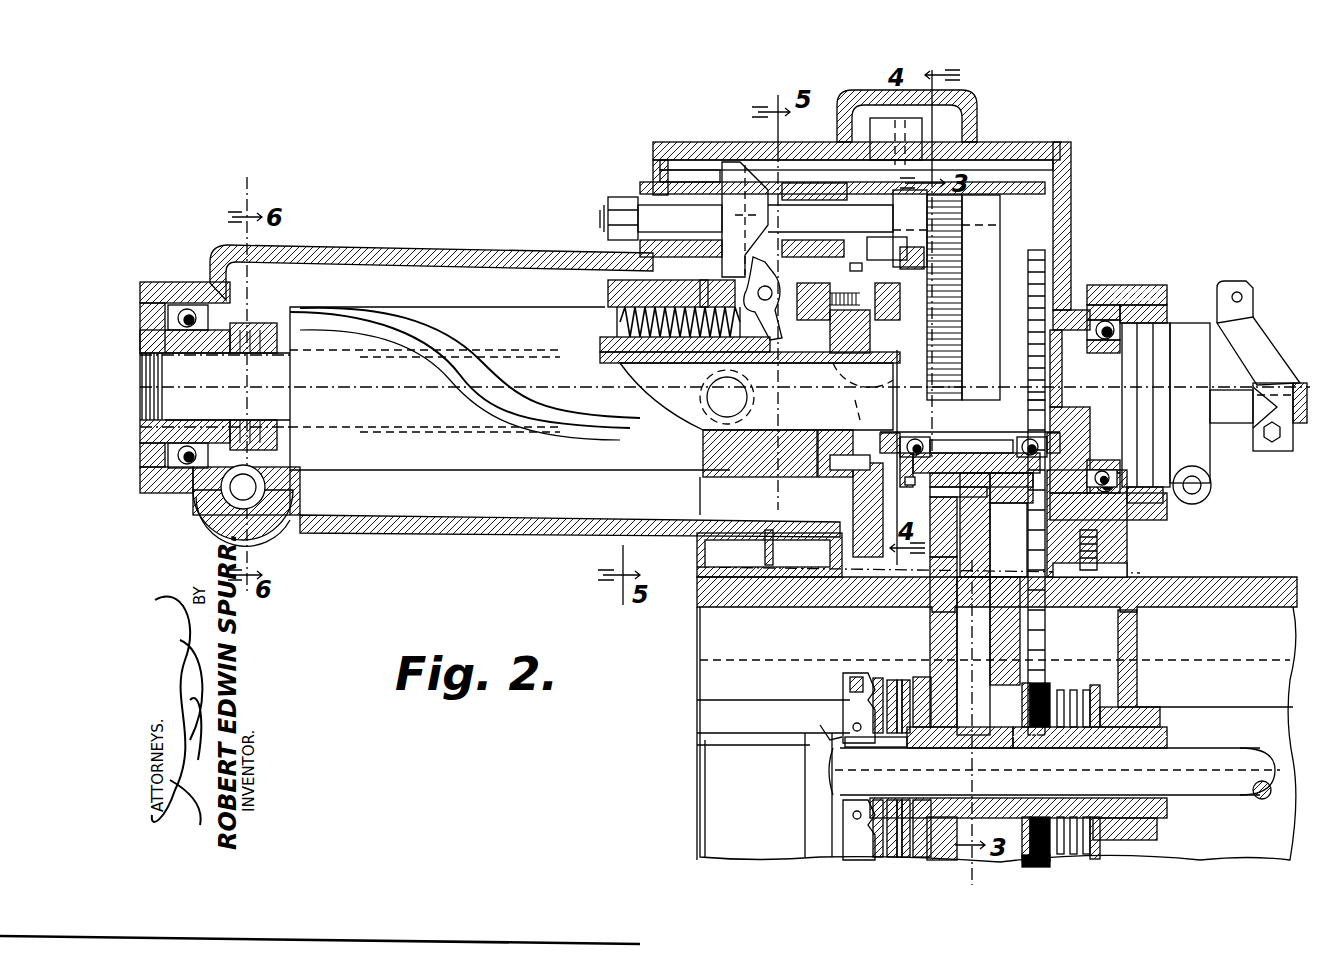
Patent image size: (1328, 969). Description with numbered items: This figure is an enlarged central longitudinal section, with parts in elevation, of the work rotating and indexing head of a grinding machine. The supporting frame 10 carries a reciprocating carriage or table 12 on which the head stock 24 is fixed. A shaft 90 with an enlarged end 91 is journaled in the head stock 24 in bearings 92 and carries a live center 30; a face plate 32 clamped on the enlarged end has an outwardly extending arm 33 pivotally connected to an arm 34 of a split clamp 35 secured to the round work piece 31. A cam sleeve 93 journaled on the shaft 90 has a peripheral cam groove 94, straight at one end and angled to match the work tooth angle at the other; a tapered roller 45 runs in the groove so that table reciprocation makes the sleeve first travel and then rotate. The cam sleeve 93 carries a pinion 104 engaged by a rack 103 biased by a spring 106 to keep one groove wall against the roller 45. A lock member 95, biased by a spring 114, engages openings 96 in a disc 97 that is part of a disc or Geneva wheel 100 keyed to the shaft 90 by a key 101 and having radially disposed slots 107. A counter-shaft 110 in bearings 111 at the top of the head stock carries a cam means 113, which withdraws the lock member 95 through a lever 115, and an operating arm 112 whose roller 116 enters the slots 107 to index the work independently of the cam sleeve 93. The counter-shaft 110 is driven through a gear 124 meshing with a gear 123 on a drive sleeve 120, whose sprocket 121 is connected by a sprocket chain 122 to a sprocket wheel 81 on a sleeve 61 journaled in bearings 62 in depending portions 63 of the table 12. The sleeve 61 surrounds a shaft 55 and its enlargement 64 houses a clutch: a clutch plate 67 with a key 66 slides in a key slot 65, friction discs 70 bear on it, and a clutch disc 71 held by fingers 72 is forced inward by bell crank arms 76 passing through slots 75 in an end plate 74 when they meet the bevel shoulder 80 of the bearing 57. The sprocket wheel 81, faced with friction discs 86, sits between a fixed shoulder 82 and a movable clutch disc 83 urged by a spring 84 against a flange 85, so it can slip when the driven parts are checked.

The main or supporting frame 10 is at (700, 712).
The carriage or table 12 is at (1235, 590).
The head stock 24 is at (700, 142).
The live center 30 is at (1222, 412).
The work piece 31 is at (1300, 370).
The face plate 32 is at (1192, 323).
The outwardly extending arm 33 is at (1250, 283).
The arm 34 is at (1250, 325).
The split clamp 35 is at (1255, 393).
The tapered roller 45 is at (758, 385).
The shaft 55 is at (820, 783).
The bearing 57 is at (700, 748).
The sleeve 61 is at (1168, 740).
The bearings 62 is at (927, 678).
The depending portions 63 is at (932, 625).
The enlargement 64 is at (850, 682).
The key slot 65 is at (1045, 755).
The key 66 is at (890, 748).
The clutch plate 67 is at (885, 748).
The disc of friction material 70 is at (880, 678).
The clutch disc 71 is at (865, 825).
The fingers 72 is at (870, 680).
The end plate 74 is at (860, 690).
The slots 75 is at (860, 710).
The bell crank arms 76 is at (870, 722).
The bevel shoulder 80 is at (815, 722).
The sprocket wheel 81 is at (1040, 685).
The fixed shoulder 82 is at (1022, 690).
The movable clutch disc 83 is at (1060, 690).
The spring 84 is at (1087, 690).
The flange 85 is at (1100, 692).
The discs 86 is at (1022, 860).
The shaft 90 is at (700, 478).
The enlarged end 91 is at (1160, 338).
The bearings 92 is at (188, 300).
The cam sleeve 93 is at (500, 470).
The cam groove 94 is at (573, 463).
The lock member 95 is at (715, 305).
The openings 96 is at (905, 290).
The disc 97 is at (835, 262).
The disc or Geneva wheel 100 is at (900, 300).
The key 101 is at (858, 405).
The rack 103 is at (225, 497).
The pinion 104 is at (262, 323).
The spring 106 is at (235, 535).
The radially disposed slots 107 is at (855, 268).
The counter-shaft 110 is at (640, 185).
The bearings 111 is at (658, 162).
The operating arm 112 is at (922, 152).
The cam means 113 is at (760, 165).
The spring 114 is at (607, 292).
The lever 115 is at (778, 290).
The roller 116 is at (880, 248).
The drive sleeve 120 is at (1002, 320).
The sprocket 121 is at (1028, 310).
The sprocket chain 122 is at (1040, 555).
The gear 123 is at (940, 300).
The gear 124 is at (964, 200).